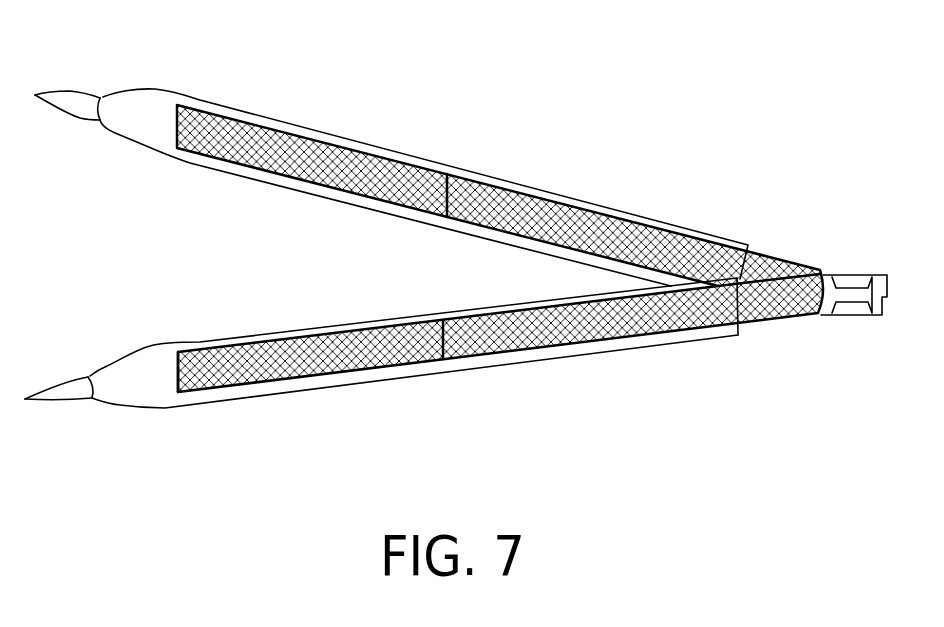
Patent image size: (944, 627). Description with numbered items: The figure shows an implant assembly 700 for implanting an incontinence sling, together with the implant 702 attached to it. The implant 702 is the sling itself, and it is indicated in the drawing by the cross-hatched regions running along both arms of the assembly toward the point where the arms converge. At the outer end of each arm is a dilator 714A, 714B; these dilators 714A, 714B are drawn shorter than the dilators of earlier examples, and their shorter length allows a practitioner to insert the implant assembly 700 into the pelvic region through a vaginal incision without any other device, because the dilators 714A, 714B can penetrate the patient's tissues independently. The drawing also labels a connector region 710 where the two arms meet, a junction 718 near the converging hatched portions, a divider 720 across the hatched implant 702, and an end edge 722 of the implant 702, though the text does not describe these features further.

The implant assembly 700 is at (456, 254).
The implant 702 is at (397, 192).
The connector clip 710 is at (880, 292).
The dilator 714A is at (78, 92).
The dilator 714B is at (70, 400).
The junction region 718 is at (740, 305).
The segment divider 720 is at (453, 340).
The grip end edge 722 is at (183, 370).